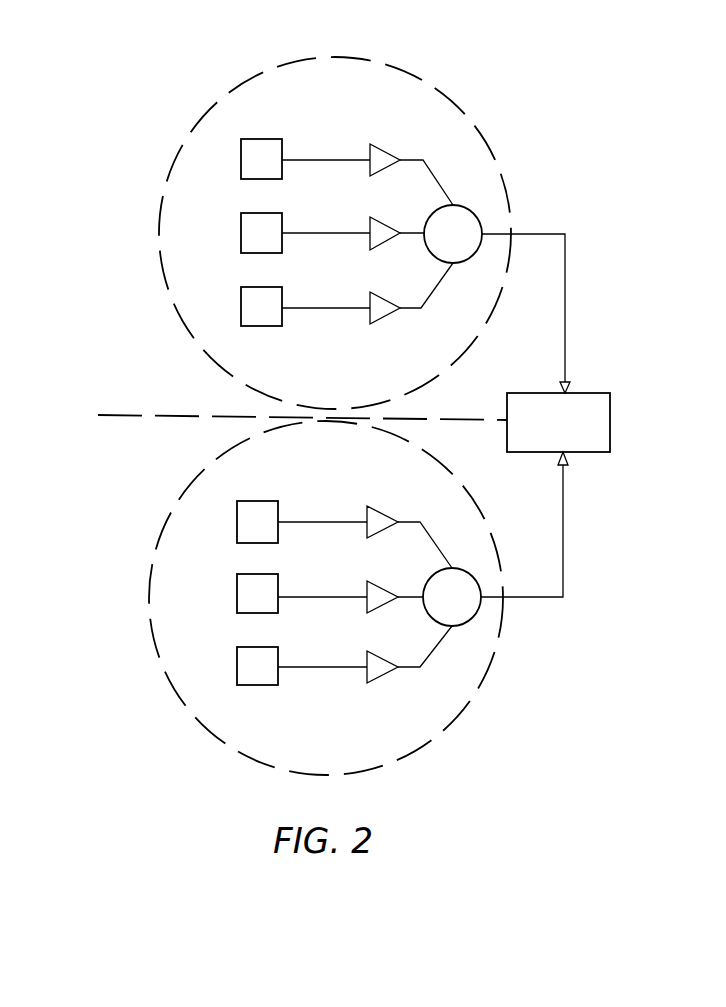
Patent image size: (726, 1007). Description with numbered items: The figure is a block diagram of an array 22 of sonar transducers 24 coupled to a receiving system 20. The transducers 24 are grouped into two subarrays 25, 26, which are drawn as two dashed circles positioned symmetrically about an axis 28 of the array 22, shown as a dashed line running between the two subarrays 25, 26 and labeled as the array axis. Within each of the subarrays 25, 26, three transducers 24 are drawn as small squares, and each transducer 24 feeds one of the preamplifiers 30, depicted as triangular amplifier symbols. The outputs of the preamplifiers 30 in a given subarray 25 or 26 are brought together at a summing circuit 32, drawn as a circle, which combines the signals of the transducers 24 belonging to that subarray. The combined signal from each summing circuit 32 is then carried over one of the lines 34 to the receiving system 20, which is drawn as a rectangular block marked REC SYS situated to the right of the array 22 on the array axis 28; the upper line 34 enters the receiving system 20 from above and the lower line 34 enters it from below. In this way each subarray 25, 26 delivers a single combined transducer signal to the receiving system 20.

The receiving system 20 is at (610, 410).
The array 22 is at (145, 721).
The sonar transducers 24 is at (250, 253).
The subarray 25 is at (450, 96).
The subarray 26 is at (441, 733).
The axis 28 is at (134, 416).
The preamplifiers 30 is at (397, 158).
The summing circuit 32 is at (452, 263).
The lines 34 is at (565, 234).